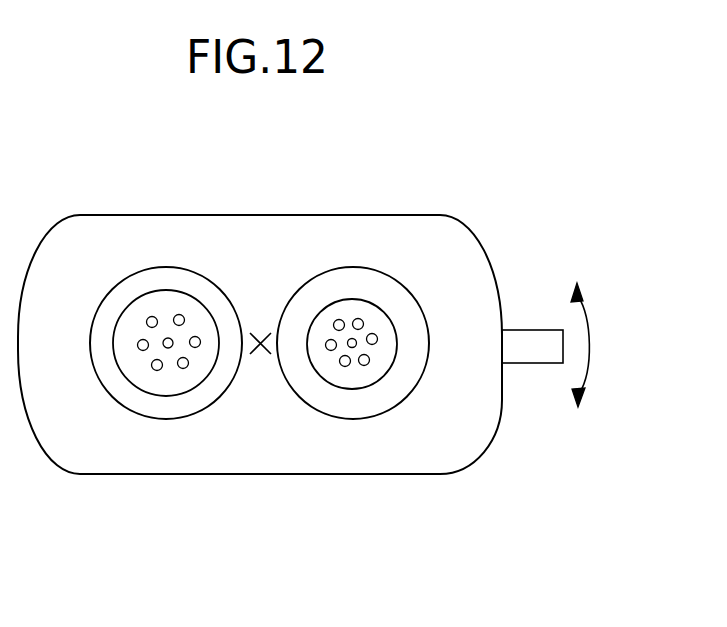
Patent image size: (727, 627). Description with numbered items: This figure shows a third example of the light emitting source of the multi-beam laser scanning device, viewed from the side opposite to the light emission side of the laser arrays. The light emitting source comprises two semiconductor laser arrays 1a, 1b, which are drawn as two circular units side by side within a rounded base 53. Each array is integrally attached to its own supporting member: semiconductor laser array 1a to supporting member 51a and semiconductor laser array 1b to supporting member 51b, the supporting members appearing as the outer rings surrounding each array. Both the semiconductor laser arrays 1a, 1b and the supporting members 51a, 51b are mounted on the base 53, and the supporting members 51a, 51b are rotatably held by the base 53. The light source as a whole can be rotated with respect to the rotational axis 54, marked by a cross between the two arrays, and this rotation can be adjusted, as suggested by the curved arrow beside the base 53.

The semiconductor laser array 1a is at (166, 300).
The semiconductor laser array 1b is at (352, 305).
The base 53 is at (431, 226).
The rotational axis 54 is at (262, 350).
The supporting member 51a is at (170, 413).
The supporting member 51b is at (353, 412).